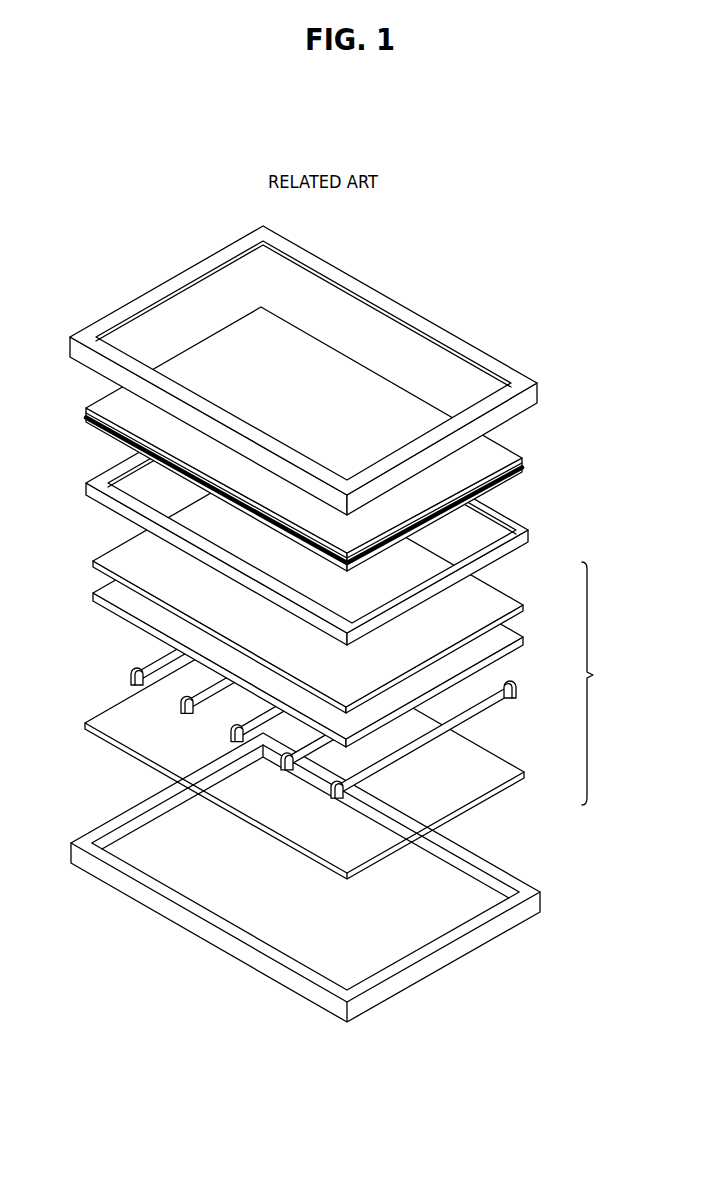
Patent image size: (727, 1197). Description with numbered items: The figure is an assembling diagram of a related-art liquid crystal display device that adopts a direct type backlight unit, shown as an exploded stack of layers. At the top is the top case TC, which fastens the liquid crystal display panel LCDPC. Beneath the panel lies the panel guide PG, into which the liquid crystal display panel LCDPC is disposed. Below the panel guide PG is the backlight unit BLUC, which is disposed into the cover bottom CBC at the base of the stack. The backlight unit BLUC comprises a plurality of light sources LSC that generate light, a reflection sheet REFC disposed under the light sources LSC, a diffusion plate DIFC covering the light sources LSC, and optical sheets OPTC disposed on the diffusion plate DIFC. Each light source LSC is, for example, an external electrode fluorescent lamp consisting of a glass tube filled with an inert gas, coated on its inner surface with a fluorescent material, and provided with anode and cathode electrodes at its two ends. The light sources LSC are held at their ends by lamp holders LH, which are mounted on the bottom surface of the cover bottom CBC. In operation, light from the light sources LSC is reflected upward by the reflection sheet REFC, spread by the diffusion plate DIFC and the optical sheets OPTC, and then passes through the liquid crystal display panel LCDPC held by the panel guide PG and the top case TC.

The top case TC is at (525, 385).
The liquid crystal display panel LCDPC is at (510, 457).
The panel guide PG is at (510, 524).
The optical sheets OPTC is at (497, 595).
The diffusion plate DIFC is at (508, 635).
The lamp holder LH is at (132, 672).
The backlight unit BLUC is at (607, 683).
The light source LSC is at (477, 710).
The reflection sheet REFC is at (487, 782).
The cover bottom CBC is at (500, 873).